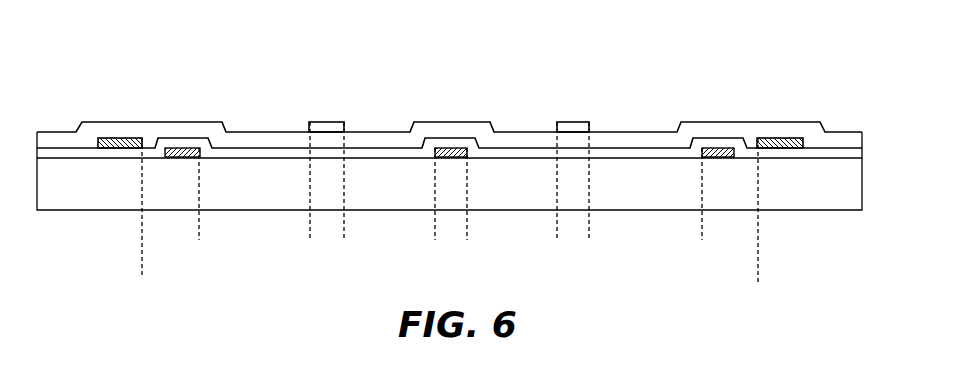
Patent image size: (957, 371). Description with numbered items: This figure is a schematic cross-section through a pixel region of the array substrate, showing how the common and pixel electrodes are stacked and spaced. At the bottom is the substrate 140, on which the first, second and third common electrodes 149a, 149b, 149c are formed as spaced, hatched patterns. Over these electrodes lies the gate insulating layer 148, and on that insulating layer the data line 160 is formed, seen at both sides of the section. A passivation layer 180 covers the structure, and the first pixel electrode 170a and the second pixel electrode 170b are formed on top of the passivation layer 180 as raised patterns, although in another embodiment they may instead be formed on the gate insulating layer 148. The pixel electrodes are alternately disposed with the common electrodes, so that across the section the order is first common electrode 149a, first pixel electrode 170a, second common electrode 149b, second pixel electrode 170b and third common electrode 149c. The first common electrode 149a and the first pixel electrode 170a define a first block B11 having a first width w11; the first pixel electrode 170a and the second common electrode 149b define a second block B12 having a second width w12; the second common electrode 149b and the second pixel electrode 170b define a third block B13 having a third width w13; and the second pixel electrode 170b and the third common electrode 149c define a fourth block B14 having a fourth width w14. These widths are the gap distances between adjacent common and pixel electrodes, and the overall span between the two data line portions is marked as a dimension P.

The substrate 140 is at (856, 192).
The gate insulating layer 148 is at (263, 160).
The first common electrode 149a is at (192, 147).
The second common electrode 149b is at (462, 147).
The third common electrode 149c is at (720, 147).
The data line 160 is at (122, 137).
The first pixel electrode 170a is at (341, 123).
The second pixel electrode 170b is at (590, 122).
The passivation layer 180 is at (383, 142).
The first block B11 is at (270, 122).
The second block B12 is at (380, 122).
The third block B13 is at (532, 124).
The fourth block B14 is at (643, 124).
The first width w11 is at (310, 234).
The second width w12 is at (435, 234).
The third width w13 is at (557, 234).
The fourth width w14 is at (702, 234).
The pitch P is at (758, 265).